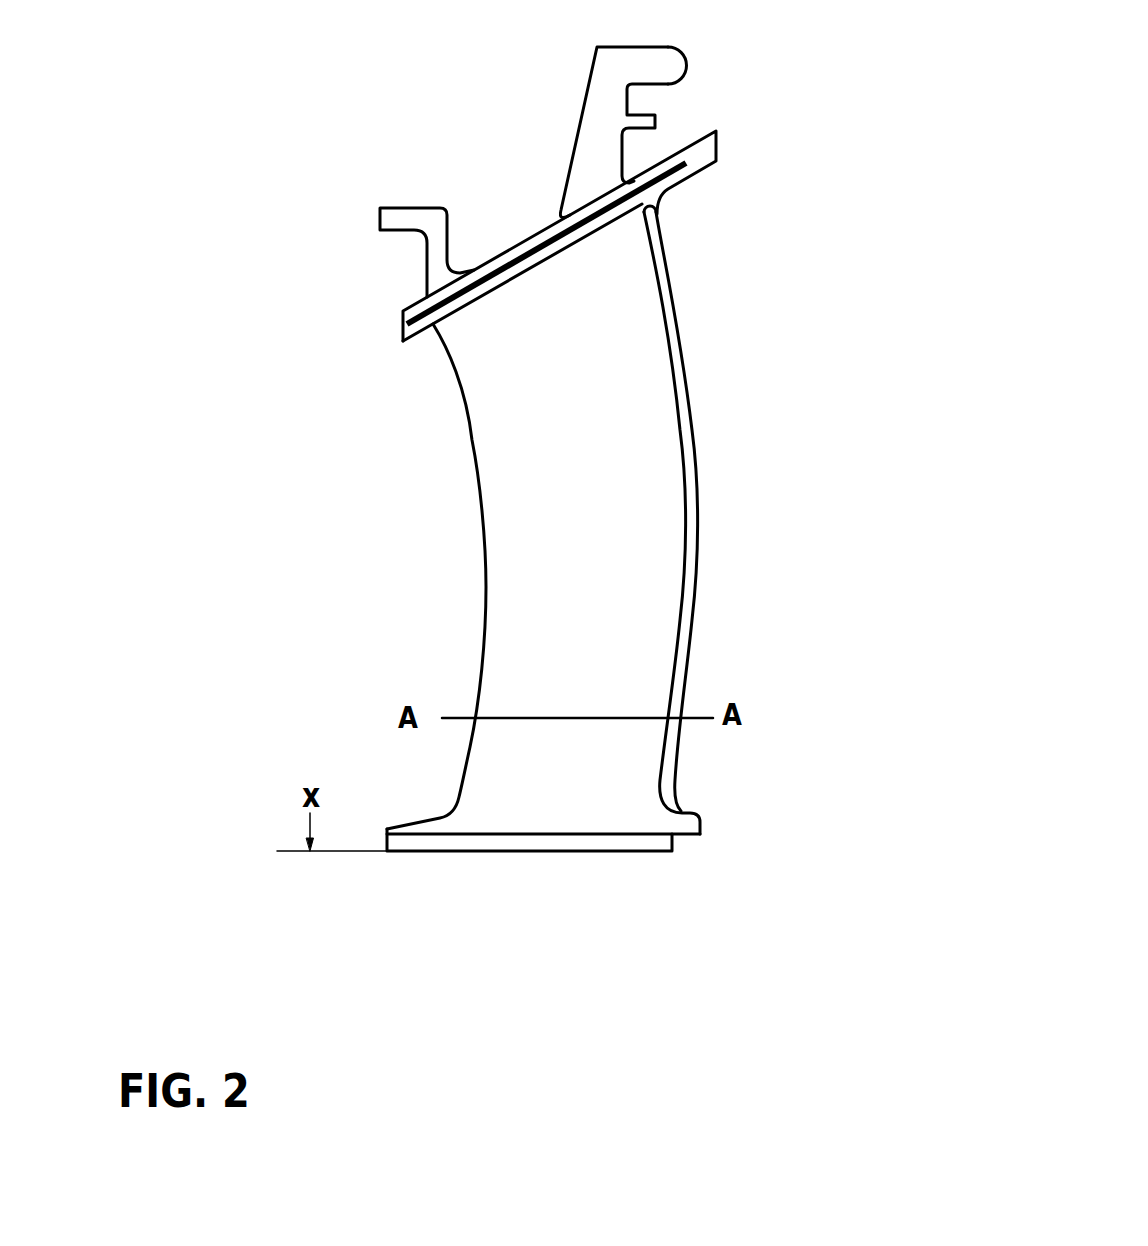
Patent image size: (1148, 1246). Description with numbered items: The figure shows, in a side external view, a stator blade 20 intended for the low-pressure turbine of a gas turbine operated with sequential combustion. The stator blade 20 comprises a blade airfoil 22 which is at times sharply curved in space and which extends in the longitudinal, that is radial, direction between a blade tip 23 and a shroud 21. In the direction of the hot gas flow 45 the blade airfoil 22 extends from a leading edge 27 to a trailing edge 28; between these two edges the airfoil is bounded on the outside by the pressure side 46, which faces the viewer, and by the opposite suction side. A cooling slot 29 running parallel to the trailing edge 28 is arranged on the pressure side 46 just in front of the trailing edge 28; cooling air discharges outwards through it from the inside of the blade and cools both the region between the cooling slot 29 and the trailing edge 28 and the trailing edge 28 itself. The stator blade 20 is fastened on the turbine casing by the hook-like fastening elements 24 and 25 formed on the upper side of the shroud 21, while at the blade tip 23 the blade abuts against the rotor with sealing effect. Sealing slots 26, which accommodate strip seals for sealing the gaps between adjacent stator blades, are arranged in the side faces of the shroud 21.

The stator blade 20 is at (490, 127).
The shroud 21 is at (705, 150).
The blade airfoil 22 is at (569, 520).
The blade tip 23 is at (657, 843).
The fastening element 24 is at (412, 221).
The fastening element 25 is at (686, 61).
The sealing slot 26 is at (673, 171).
The leading edge 27 is at (462, 480).
The trailing edge 28 is at (692, 429).
The cooling slot 29 is at (668, 345).
The hot gas flow 45 is at (418, 633).
The pressure side 46 is at (617, 628).